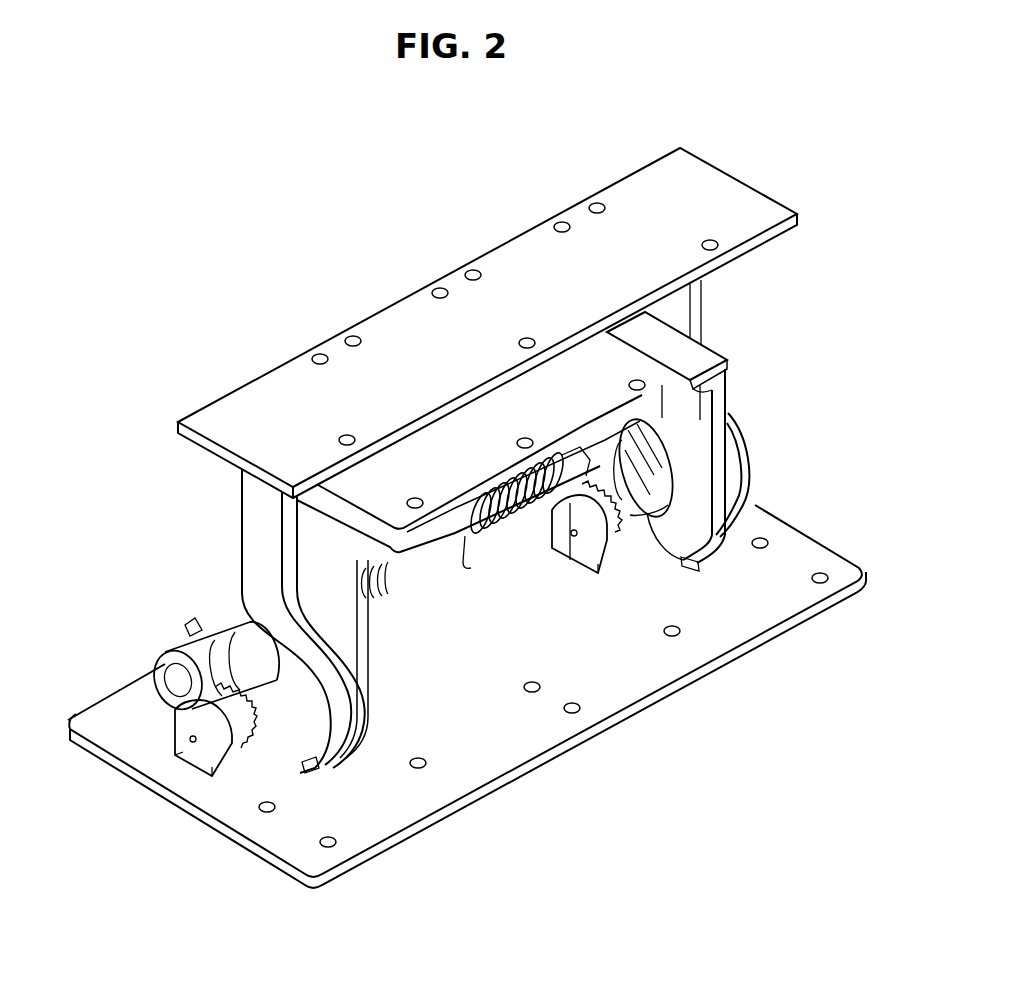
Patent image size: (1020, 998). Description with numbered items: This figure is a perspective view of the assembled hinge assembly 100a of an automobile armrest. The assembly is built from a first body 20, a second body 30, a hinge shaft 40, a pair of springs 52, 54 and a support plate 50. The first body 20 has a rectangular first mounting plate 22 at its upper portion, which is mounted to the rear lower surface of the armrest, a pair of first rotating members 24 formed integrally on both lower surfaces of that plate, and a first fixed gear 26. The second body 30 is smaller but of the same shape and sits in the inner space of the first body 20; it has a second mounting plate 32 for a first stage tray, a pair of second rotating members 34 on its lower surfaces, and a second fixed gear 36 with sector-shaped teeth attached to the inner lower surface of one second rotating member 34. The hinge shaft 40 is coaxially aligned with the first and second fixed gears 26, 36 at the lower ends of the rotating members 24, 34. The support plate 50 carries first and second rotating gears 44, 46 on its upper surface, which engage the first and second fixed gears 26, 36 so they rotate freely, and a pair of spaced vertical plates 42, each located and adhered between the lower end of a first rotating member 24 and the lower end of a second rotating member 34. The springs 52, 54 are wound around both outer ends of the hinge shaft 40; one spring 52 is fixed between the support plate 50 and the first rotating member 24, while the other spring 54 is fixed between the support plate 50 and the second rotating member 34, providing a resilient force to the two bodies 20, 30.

The moving apparatus 100a is at (428, 200).
The first body 20 is at (236, 484).
The first mounting plate 22 is at (317, 385).
The first rotating members 24 is at (283, 750).
The first fixed gear 26 is at (168, 703).
The second body 30 is at (685, 368).
The second mounting plate 32 is at (577, 375).
The second rotating members 34 is at (746, 361).
The second fixed gear 36 is at (577, 490).
The hinge shaft 40 is at (420, 552).
The vertical plates 42 is at (185, 625).
The first rotating gear 44 is at (285, 750).
The second rotating gear 46 is at (623, 540).
The support plate 50 is at (578, 758).
The spring 52 is at (392, 590).
The spring 54 is at (493, 535).